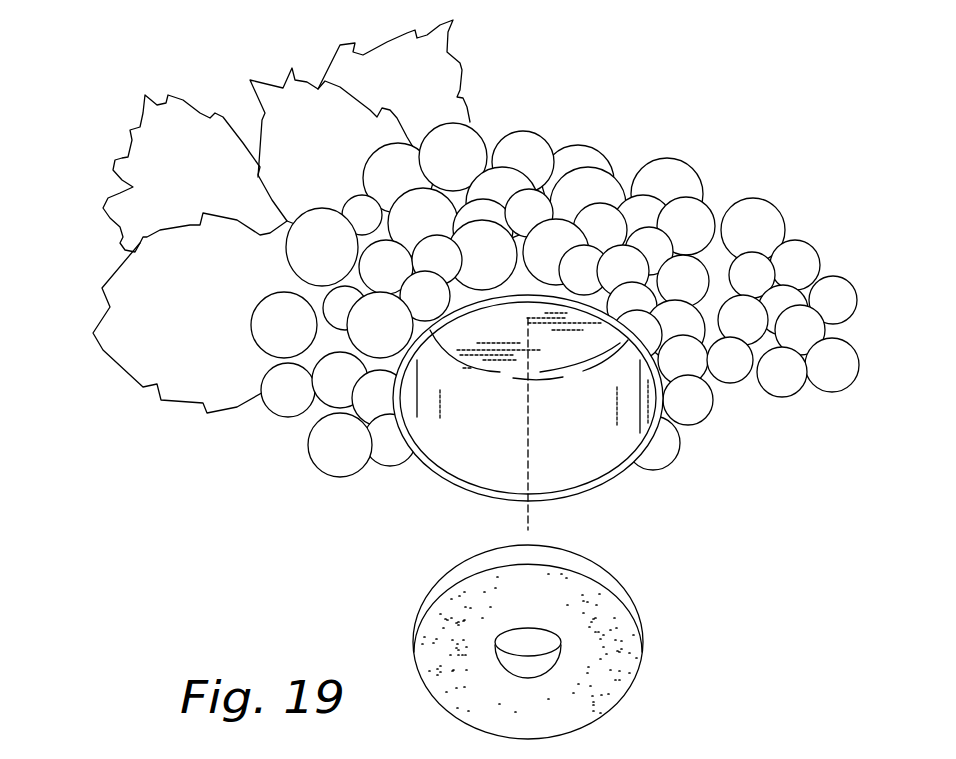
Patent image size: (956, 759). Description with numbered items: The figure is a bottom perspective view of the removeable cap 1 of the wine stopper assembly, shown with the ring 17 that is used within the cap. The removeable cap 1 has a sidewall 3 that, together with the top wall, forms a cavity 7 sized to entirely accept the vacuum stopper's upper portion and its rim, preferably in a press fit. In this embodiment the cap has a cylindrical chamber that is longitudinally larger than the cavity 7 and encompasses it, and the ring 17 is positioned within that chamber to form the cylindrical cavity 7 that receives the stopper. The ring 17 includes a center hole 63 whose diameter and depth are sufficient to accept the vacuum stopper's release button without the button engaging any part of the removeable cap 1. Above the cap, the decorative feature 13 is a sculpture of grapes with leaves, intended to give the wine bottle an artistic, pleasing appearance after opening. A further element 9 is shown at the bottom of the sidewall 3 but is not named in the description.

The removeable cap 1 is at (451, 269).
The sidewall 3 is at (582, 460).
The cavity 7 is at (473, 413).
The container bottom wall 9 is at (498, 492).
The decorative feature 13 is at (528, 150).
The ring 17 is at (413, 622).
The center hole 63 is at (562, 658).